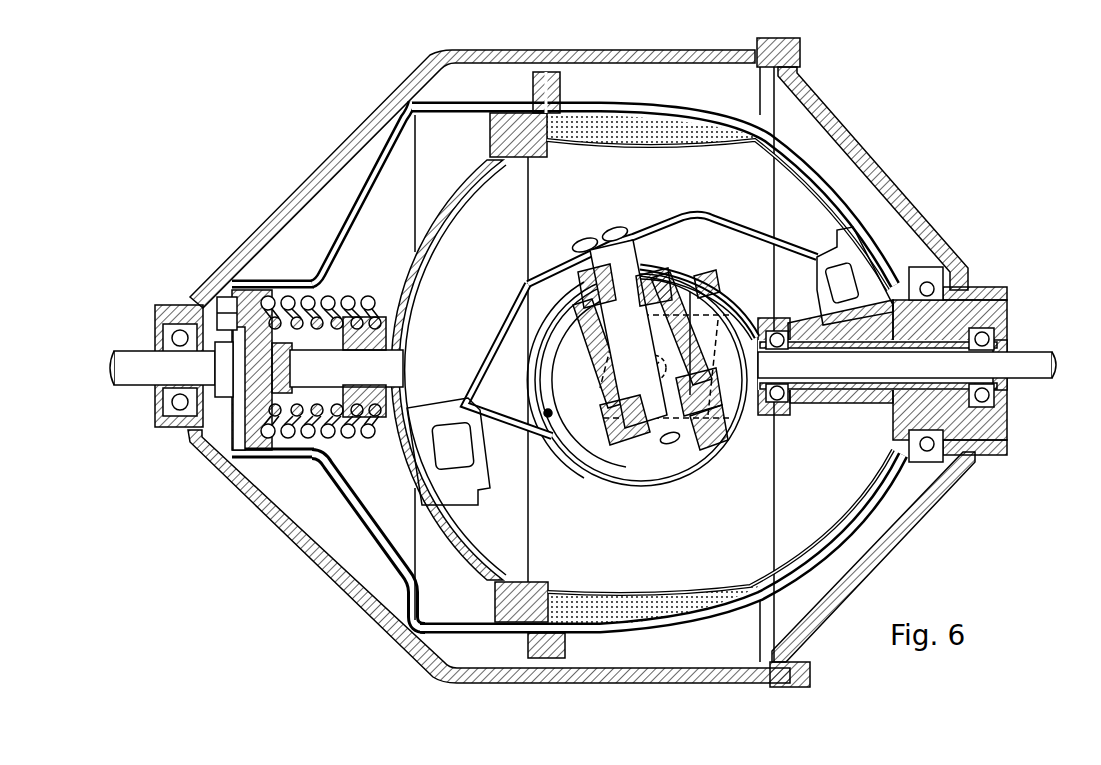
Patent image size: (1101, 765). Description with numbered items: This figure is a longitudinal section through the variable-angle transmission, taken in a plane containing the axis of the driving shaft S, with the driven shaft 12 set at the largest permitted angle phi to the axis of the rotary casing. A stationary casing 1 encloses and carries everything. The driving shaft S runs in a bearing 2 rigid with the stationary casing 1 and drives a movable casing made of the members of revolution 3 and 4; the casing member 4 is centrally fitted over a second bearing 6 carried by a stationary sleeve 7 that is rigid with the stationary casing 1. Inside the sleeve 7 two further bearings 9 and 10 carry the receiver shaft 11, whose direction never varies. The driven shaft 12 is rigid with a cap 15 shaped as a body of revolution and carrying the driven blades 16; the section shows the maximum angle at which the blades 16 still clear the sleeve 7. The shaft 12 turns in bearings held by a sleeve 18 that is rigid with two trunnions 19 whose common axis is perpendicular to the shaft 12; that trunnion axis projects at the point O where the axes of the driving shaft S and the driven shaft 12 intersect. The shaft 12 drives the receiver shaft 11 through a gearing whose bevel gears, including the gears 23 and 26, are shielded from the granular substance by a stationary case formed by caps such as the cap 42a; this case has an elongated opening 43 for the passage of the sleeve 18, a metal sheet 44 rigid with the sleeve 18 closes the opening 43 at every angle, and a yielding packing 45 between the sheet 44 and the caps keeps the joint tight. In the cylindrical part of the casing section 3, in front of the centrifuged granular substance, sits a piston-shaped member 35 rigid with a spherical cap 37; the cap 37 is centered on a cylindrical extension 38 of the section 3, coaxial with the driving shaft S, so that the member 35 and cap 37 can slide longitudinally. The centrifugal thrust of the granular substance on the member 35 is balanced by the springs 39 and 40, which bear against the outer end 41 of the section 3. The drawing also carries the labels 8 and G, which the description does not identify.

The stationary casing 1 is at (288, 204).
The bearing 2 is at (170, 404).
The casing section 3 is at (341, 232).
The casing member 4 is at (857, 530).
The second bearing 6 is at (925, 270).
The stationary sleeve 7 is at (906, 408).
The liner 8 is at (560, 133).
The bearing 9 is at (776, 392).
The bearing 10 is at (981, 389).
The receiver shaft 11 is at (1029, 360).
The driven shaft 12 is at (622, 242).
The cap 15 is at (742, 225).
The driven blades 16 is at (838, 240).
The sleeve 18 is at (590, 335).
The trunnions 19 is at (612, 334).
The gear 23 is at (626, 445).
The gear 26 is at (703, 449).
The piston-shaped member 35 is at (496, 140).
The spherical cap 37 is at (452, 208).
The cylindrical extension 38 is at (396, 368).
The spring 39 is at (348, 300).
The spring 40 is at (351, 436).
The outer end 41 is at (257, 280).
The cap 42a is at (636, 480).
The elongated opening 43 is at (535, 362).
The metal sheet 44 is at (548, 380).
The yielding packing 45 is at (552, 413).
The driving shaft S is at (128, 356).
The grease G is at (606, 136).
The point of intersection O is at (656, 380).